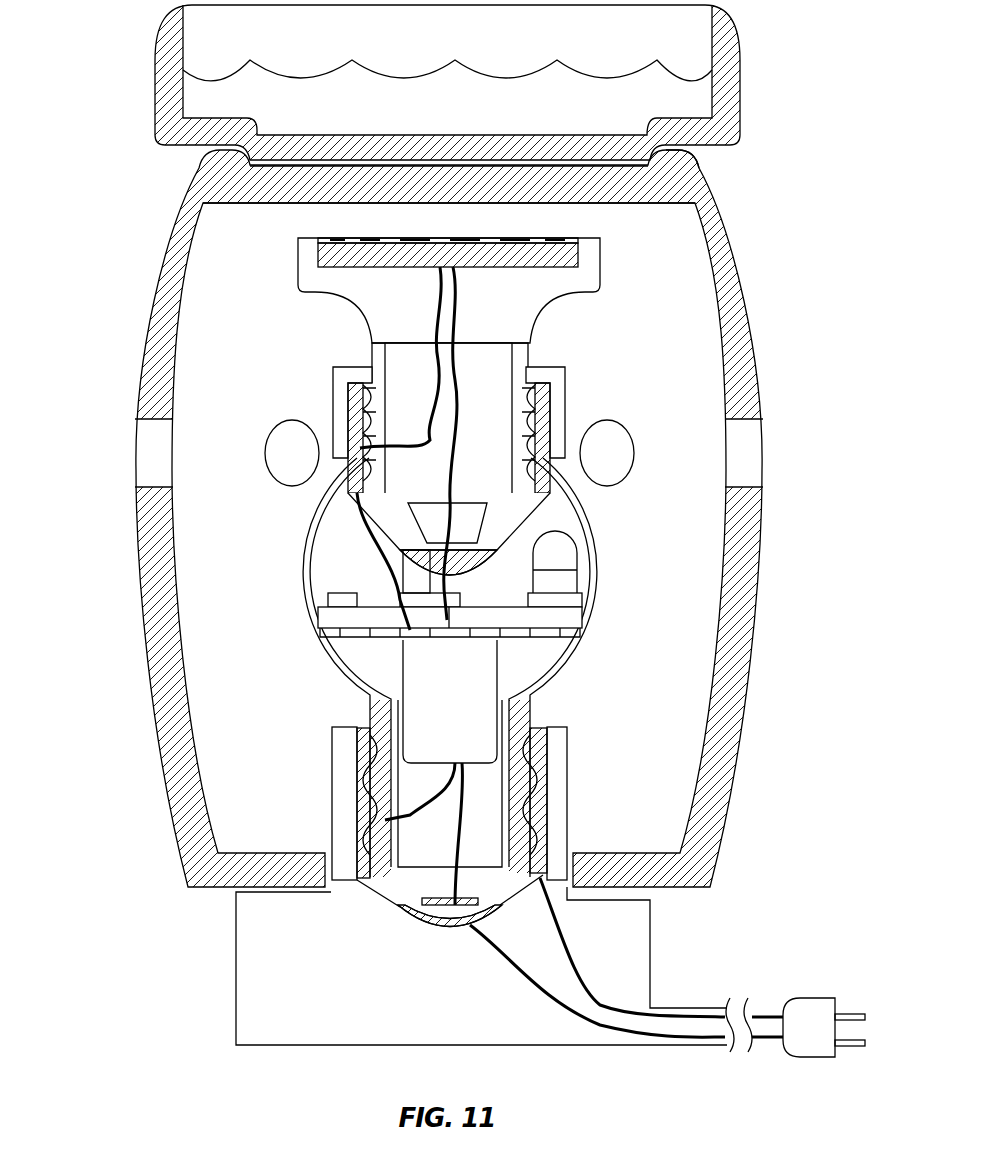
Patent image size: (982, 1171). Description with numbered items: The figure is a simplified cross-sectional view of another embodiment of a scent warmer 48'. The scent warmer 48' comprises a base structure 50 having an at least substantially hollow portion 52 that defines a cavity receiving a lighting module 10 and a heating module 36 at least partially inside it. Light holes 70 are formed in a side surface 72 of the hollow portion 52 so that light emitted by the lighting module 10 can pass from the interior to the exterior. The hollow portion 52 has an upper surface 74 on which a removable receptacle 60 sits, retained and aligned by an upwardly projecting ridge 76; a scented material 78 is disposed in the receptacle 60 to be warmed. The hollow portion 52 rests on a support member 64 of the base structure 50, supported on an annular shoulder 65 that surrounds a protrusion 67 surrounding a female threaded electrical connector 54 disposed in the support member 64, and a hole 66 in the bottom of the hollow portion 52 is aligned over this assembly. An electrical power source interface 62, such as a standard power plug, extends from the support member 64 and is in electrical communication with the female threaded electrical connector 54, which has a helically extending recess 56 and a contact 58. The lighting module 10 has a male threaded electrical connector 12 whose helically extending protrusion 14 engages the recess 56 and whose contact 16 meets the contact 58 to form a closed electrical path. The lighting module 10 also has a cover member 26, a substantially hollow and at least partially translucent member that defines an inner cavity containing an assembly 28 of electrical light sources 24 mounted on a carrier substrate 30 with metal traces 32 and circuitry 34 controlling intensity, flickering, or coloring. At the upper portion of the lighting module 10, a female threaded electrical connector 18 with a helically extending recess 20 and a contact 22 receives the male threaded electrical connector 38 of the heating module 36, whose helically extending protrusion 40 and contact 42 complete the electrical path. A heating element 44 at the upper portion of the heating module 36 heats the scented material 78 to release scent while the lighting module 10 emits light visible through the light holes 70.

The lighting module 10 is at (545, 662).
The male threaded electrical connector 12 is at (589, 802).
The helically extending protrusion 14 is at (542, 830).
The contact 16 is at (424, 943).
The female threaded electrical connector 18 is at (352, 440).
The helically extending recess 20 is at (542, 428).
The contact 22 is at (405, 597).
The electrical light sources 24 is at (420, 600).
The cover member 26 is at (416, 667).
The assembly of electrical light sources 28 is at (372, 585).
The carrier substrate 30 is at (527, 622).
The metal traces 32 is at (427, 642).
The circuitry 34 is at (505, 650).
The heating module 36 is at (444, 290).
The male threaded electrical connector 38 is at (542, 400).
The helically extending protrusion 40 is at (451, 417).
The contact 42 is at (470, 545).
The heating element 44 is at (350, 256).
The scent warmer 48' is at (460, 531).
The base structure 50 is at (440, 601).
The at least substantially hollow portion 52 is at (165, 546).
The female threaded electrical connector 54 is at (348, 880).
The helically extending recess 56 is at (366, 800).
The contact 58 is at (435, 920).
The receptacle 60 is at (478, 82).
The electrical power source interface 62 is at (855, 1010).
The support member 64 is at (446, 969).
The annular shoulder 65 is at (610, 920).
The hole 66 is at (620, 880).
The protrusion 67 is at (297, 803).
The light hole 70 is at (146, 455).
The side surface 72 is at (232, 321).
The upper surface 74 is at (487, 177).
The upwardly projecting ridge 76 is at (690, 158).
The scented material 78 is at (441, 110).